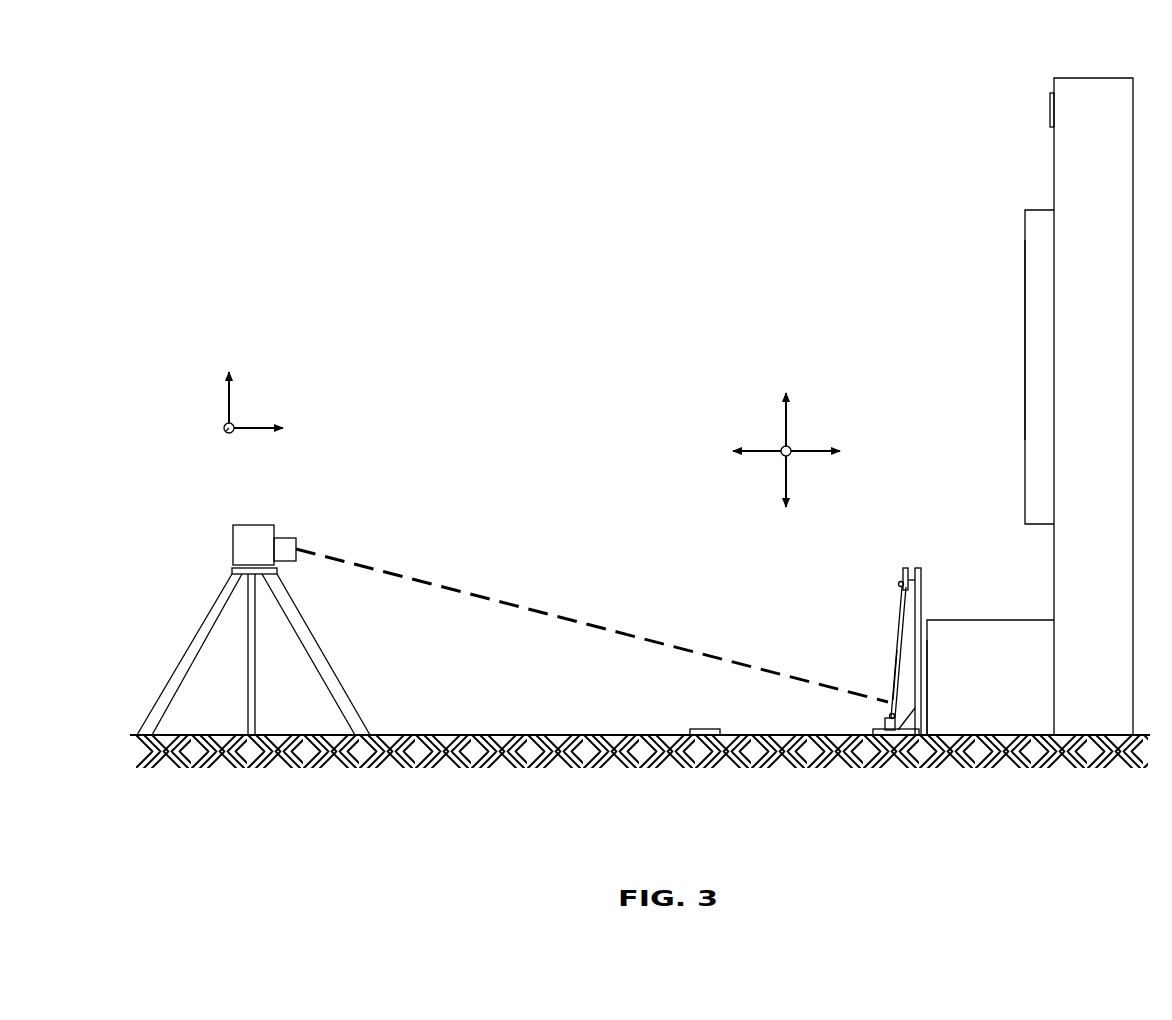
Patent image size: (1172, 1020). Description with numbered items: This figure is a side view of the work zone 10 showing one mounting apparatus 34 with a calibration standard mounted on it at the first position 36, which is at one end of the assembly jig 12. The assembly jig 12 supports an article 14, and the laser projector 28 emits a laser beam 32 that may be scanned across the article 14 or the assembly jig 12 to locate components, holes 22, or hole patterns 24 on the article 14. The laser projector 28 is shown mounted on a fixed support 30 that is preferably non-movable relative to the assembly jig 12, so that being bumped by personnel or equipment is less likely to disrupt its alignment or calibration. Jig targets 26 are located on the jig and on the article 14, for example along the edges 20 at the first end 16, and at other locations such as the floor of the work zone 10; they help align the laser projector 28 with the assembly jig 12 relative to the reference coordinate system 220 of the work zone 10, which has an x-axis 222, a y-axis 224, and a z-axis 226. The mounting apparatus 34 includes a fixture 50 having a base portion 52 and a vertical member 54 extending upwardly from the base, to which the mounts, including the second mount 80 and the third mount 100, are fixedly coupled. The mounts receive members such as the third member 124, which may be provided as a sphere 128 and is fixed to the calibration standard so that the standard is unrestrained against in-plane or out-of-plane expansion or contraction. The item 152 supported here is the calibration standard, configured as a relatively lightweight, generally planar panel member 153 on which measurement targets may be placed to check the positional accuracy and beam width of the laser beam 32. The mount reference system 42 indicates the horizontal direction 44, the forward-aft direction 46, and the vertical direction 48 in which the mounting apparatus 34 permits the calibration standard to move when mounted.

The work zone 10 is at (357, 123).
The assembly jig 12 is at (1093, 78).
The article 14 is at (1040, 210).
The first end 16 is at (1040, 275).
The edges 20 is at (1040, 325).
The holes 22 is at (1025, 365).
The hole patterns 24 is at (1025, 420).
The jig targets 26 is at (1050, 108).
The laser projector 28 is at (240, 536).
The fixed support 30 is at (218, 603).
The laser beam 32 is at (367, 568).
The mounting apparatus 34 is at (920, 568).
The first position 36 is at (833, 737).
The mount reference system 42 is at (791, 448).
The horizontal direction 44 is at (783, 448).
The forward-aft direction 46 is at (752, 453).
The vertical direction 48 is at (786, 413).
The fixture 50 is at (922, 602).
The base portion 52 is at (868, 737).
The vertical member 54 is at (927, 678).
The second mount 80 is at (893, 738).
The third mount 100 is at (905, 570).
The third member 124 is at (888, 722).
The sphere 128 is at (900, 586).
The item 152 is at (897, 636).
The panel member 153 is at (895, 670).
The reference coordinate system 220 is at (224, 426).
The x-axis 222 is at (252, 430).
The y-axis 224 is at (227, 432).
The z-axis 226 is at (229, 393).